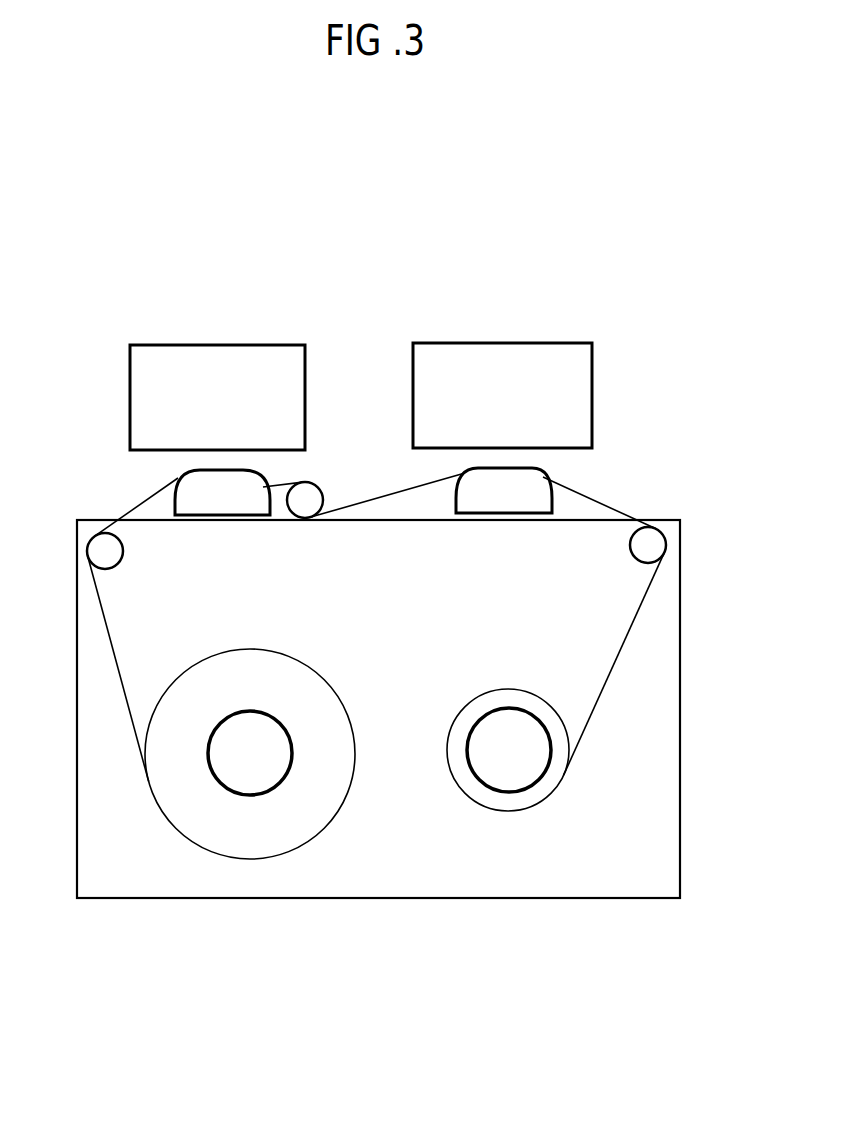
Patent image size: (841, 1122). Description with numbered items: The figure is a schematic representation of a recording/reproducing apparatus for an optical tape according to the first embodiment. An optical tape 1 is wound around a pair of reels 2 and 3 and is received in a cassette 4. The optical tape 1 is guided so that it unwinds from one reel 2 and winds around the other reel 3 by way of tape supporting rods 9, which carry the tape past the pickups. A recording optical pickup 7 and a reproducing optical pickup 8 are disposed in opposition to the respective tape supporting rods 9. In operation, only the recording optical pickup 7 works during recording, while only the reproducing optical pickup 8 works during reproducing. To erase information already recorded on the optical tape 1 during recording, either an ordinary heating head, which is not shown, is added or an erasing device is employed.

The optical tape 1 is at (108, 632).
The reel 2 is at (248, 783).
The reel 3 is at (520, 783).
The cassette 4 is at (681, 748).
The recording optical pickup 7 is at (500, 352).
The reproducing optical pickup 8 is at (218, 356).
The tape supporting rod 9 is at (220, 507).